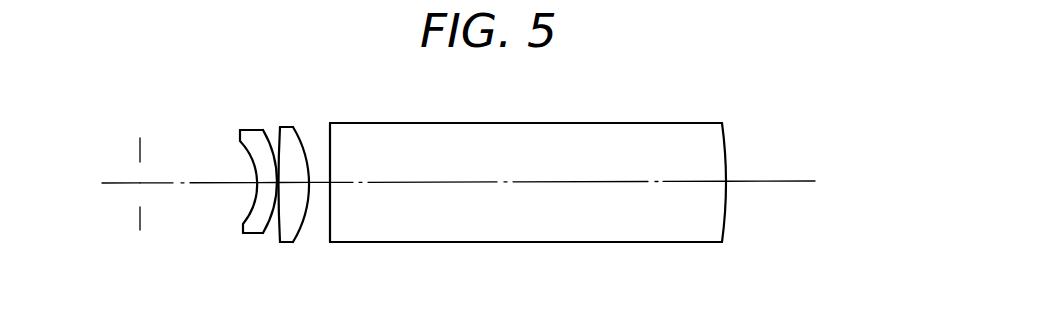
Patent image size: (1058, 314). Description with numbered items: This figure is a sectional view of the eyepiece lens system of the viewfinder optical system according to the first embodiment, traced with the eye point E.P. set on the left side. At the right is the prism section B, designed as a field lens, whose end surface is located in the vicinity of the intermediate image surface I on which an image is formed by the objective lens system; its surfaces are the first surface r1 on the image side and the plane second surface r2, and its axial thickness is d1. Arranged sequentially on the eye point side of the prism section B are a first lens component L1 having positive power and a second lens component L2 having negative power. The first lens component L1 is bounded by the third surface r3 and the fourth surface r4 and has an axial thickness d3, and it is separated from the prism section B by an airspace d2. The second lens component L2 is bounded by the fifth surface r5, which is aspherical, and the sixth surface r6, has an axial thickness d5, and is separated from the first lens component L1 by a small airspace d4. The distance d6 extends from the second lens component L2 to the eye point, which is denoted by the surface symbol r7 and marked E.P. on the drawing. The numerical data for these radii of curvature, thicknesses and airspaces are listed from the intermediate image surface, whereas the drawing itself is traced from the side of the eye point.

The radius of curvature of first surface r1 is at (726, 146).
The radius of curvature of second surface r2 is at (329, 139).
The radius of curvature of third surface r3 is at (306, 131).
The radius of curvature of fourth surface r4 is at (278, 130).
The radius of curvature of fifth surface r5 is at (269, 132).
The radius of curvature of sixth surface r6 is at (247, 153).
The eye point r7 is at (142, 147).
The thickness of prism section d1 is at (490, 183).
The airspace between prism section and first lens component d2 is at (318, 186).
The thickness of first lens component d3 is at (299, 178).
The airspace between first and second lens components d4 is at (273, 213).
The thickness of second lens component d5 is at (246, 204).
The distance from second lens component to eye point d6 is at (163, 184).
The first lens component L1 is at (351, 191).
The second lens component L2 is at (242, 197).
The prism section B is at (547, 188).
The intermediate image surface I is at (727, 185).
The eye point E.P. is at (147, 190).